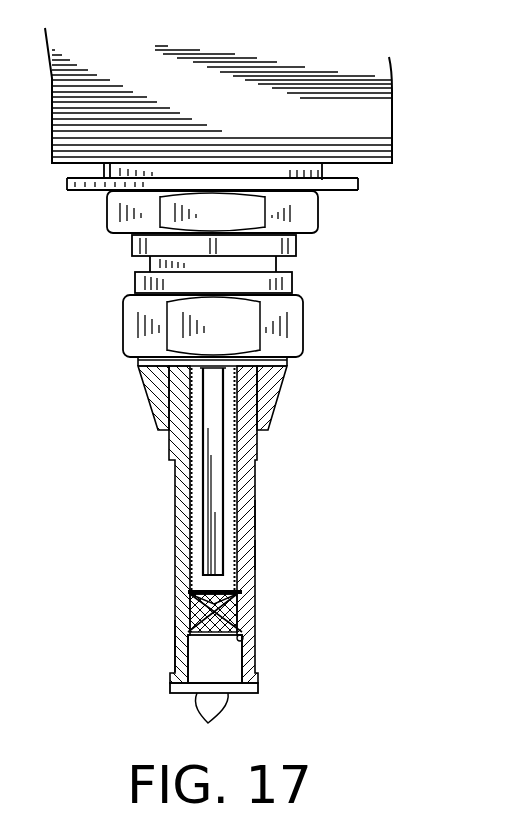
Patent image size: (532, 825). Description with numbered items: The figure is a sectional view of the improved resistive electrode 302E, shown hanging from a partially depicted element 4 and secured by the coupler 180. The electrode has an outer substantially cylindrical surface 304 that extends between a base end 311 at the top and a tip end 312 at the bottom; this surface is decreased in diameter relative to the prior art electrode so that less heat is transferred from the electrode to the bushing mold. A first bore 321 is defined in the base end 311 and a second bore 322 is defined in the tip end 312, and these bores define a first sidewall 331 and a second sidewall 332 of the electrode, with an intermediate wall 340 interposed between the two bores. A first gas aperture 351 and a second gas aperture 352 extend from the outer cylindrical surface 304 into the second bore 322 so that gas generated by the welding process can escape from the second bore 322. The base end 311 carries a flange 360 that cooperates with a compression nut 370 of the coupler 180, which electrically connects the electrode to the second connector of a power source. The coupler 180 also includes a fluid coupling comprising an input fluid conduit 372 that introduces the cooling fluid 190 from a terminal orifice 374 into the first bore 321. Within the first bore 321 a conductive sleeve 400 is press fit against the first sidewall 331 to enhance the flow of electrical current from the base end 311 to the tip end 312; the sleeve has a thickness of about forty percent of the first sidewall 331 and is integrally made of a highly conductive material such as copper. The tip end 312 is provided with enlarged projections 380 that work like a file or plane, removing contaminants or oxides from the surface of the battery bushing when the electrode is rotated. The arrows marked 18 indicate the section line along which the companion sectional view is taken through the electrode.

The housing block 4 is at (52, 82).
The coupler 180 is at (325, 260).
The compression nut 370 is at (295, 318).
The base end 311 is at (290, 347).
The input fluid conduit 372 is at (163, 393).
The improved resistive electrode 302E is at (263, 425).
The first sidewall 331 is at (177, 523).
The first bore 321 is at (255, 480).
The conductive sleeve 400 is at (255, 516).
The outer substantially cylindrical surface 304 is at (258, 553).
The flange 360 is at (213, 407).
The cooling fluid 190 is at (200, 557).
The terminal orifice 374 is at (182, 597).
The intermediate wall 340 is at (240, 605).
The first gas aperture 351 is at (245, 625).
The second gas aperture 352 is at (177, 627).
The second bore 322 is at (243, 642).
The second sidewall 332 is at (183, 648).
The tip end 312 is at (255, 690).
The enlarged projections 380 is at (205, 724).
The section line 18- 18 is at (110, 542).